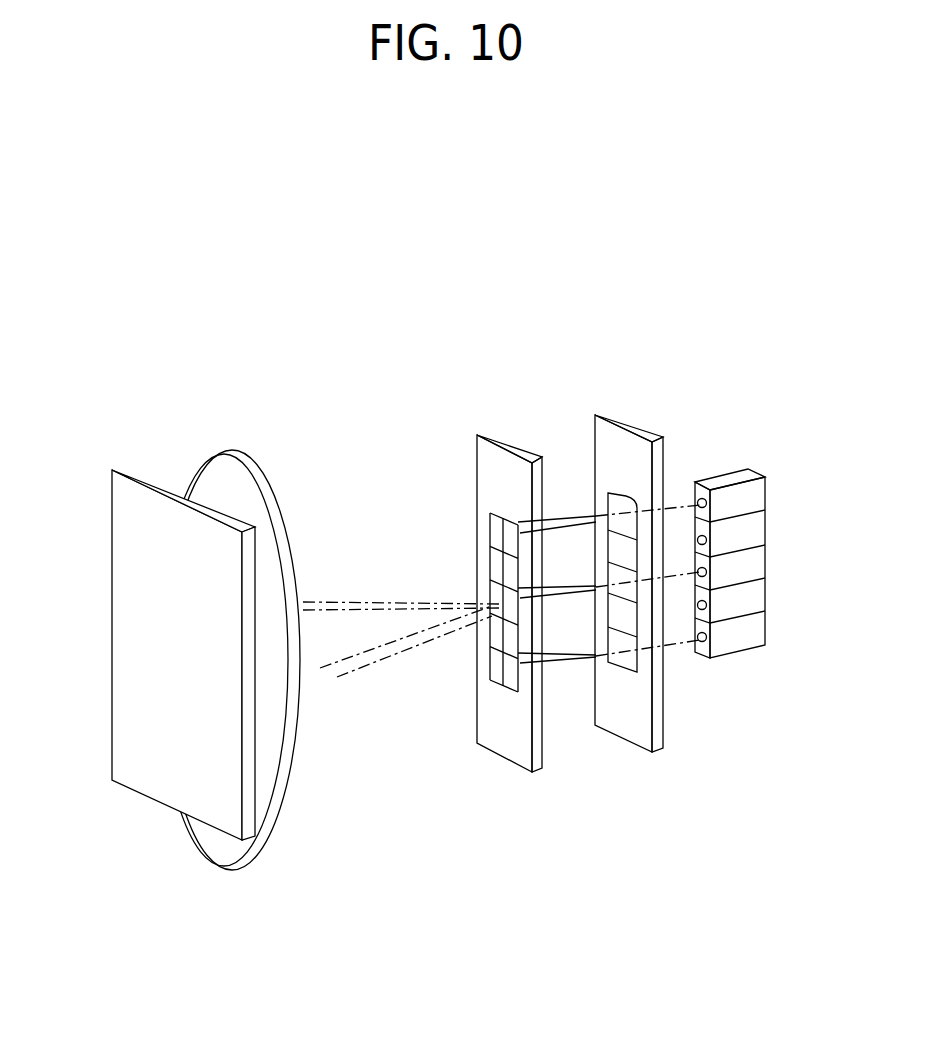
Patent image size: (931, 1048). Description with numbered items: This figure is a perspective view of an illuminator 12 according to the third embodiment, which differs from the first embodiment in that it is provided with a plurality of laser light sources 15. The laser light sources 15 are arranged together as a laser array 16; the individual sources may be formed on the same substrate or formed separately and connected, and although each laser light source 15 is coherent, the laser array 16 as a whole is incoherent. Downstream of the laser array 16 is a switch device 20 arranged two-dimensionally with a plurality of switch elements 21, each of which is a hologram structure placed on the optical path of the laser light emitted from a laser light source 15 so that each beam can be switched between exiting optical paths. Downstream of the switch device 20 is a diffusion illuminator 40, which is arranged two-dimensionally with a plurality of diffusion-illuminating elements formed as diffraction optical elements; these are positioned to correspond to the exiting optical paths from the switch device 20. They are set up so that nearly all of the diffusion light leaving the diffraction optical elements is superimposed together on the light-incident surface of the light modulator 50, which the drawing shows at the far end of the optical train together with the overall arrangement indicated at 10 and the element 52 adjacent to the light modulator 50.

The head-up display device 10 is at (675, 260).
The illuminator 12 is at (755, 392).
The laser light source 15 is at (762, 573).
The laser array 16 is at (768, 611).
The switch device 20 is at (626, 633).
The switch element 21 is at (620, 672).
The diffusion illuminator 40 is at (493, 762).
The light modulator 50 is at (113, 466).
The lens 52 is at (230, 452).